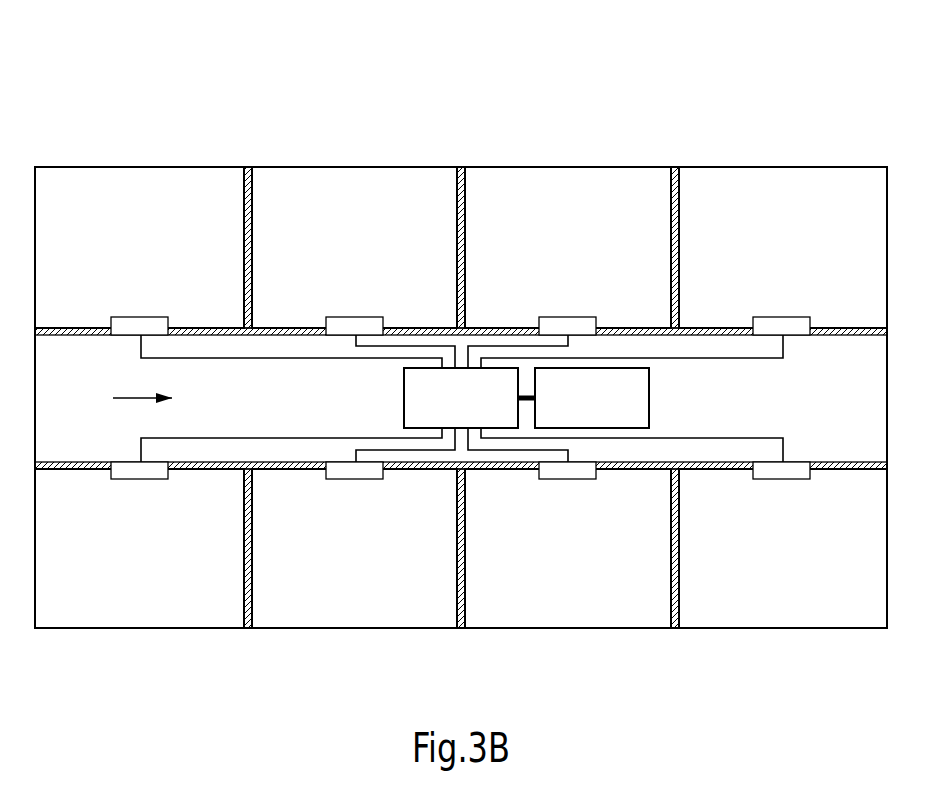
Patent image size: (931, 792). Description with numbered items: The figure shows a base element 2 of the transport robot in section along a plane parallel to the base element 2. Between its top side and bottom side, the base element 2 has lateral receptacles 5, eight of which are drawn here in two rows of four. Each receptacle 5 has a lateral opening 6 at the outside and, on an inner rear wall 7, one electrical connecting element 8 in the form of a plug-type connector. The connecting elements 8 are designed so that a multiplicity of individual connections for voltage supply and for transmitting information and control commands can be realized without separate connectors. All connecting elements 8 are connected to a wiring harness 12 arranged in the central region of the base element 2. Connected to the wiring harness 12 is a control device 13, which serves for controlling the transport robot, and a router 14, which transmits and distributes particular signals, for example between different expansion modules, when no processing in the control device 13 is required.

The base element 2 is at (206, 97).
The receptacle 5 is at (388, 200).
The lateral opening 6 is at (134, 167).
The inner rear wall 7 is at (70, 327).
The electrical connecting element 8 is at (135, 325).
The wiring harness 12 is at (124, 400).
The control device 13 is at (607, 412).
The router 14 is at (476, 412).